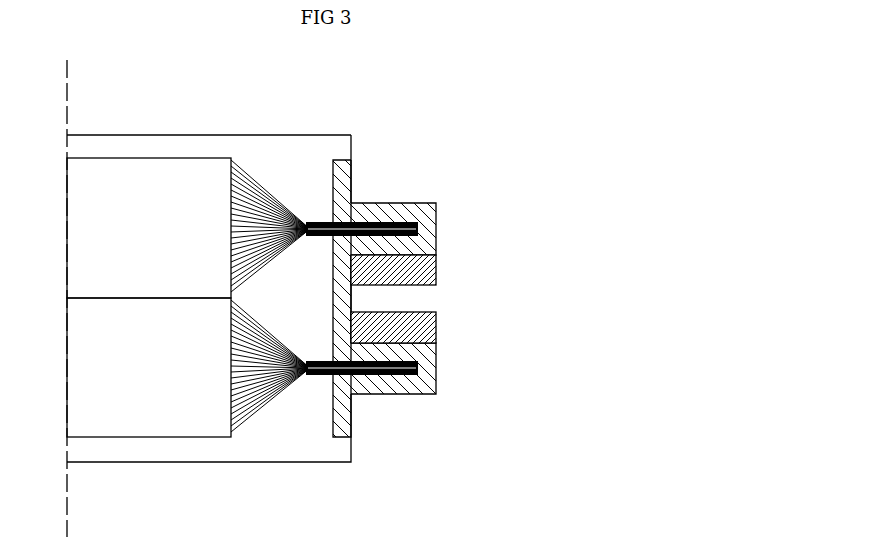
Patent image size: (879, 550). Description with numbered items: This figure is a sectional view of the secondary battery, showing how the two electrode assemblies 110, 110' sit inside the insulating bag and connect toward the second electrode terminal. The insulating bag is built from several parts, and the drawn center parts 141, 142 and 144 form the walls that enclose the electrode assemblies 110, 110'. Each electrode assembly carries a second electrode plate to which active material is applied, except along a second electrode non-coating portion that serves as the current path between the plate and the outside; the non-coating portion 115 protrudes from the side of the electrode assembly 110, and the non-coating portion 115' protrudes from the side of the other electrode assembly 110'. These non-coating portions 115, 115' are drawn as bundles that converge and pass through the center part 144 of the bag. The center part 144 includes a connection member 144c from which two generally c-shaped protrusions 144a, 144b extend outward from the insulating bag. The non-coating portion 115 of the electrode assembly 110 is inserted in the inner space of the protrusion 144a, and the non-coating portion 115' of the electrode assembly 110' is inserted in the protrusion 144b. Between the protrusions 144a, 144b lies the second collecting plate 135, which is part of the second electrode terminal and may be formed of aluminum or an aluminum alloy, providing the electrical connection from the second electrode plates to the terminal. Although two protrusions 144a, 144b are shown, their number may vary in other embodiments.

The electrode assembly 110 is at (149, 413).
The electrode assembly 110' is at (149, 185).
The second electrode non-coating portion 115 is at (278, 415).
The second electrode non-coating portion 115' is at (281, 182).
The second collecting plate 135 is at (432, 265).
The center part 141 is at (200, 462).
The center part 142 is at (226, 142).
The center part 144 is at (437, 297).
The protrusion 144a is at (434, 368).
The protrusion 144b is at (434, 228).
The connection member 144c is at (340, 163).